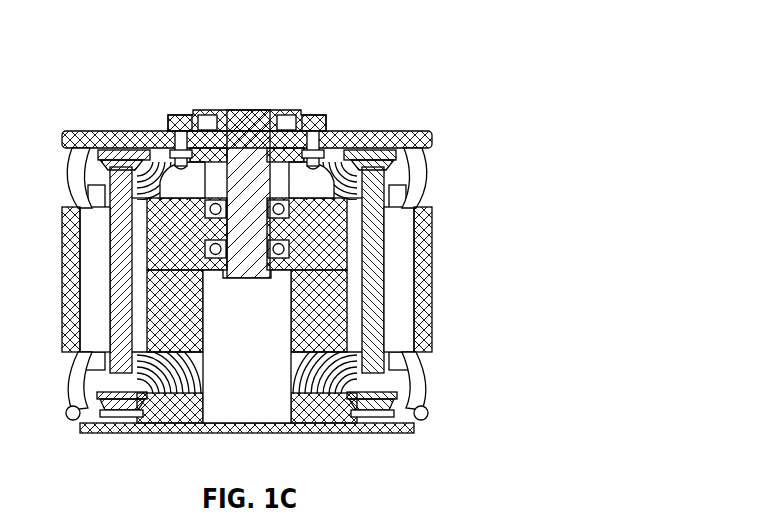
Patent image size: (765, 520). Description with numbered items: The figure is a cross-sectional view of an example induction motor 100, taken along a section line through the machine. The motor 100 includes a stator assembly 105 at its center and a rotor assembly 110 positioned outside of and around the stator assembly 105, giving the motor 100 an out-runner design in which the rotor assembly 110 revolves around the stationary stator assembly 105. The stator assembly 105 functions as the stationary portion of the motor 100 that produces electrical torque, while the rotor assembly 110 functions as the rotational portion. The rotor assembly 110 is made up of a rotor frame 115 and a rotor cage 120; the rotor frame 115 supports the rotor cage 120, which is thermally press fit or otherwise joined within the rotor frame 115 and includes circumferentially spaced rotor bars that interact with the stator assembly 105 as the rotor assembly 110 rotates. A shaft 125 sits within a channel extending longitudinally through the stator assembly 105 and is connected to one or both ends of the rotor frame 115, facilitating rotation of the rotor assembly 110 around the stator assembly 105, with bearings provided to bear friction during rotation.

The induction motor 100 is at (376, 226).
The stator assembly 105 is at (326, 226).
The rotor assembly 110 is at (430, 280).
The rotor frame 115 is at (430, 333).
The rotor cage 120 is at (402, 192).
The shaft 125 is at (250, 172).